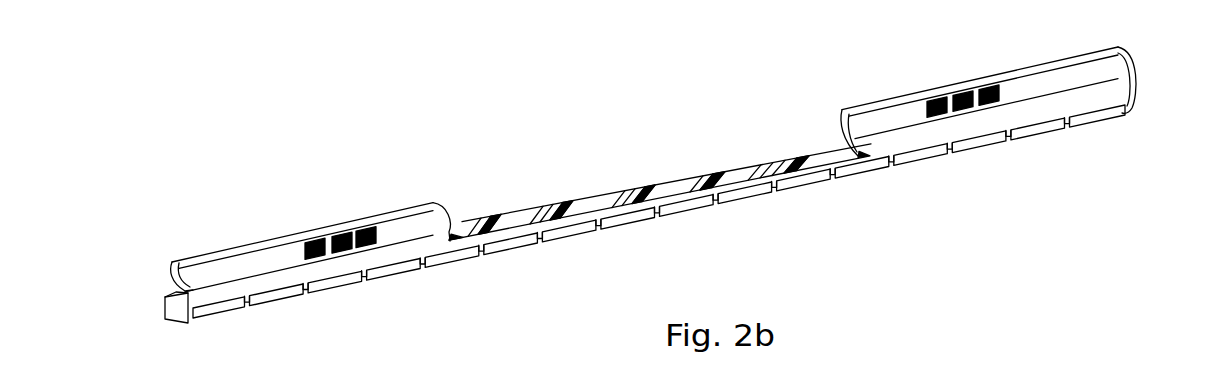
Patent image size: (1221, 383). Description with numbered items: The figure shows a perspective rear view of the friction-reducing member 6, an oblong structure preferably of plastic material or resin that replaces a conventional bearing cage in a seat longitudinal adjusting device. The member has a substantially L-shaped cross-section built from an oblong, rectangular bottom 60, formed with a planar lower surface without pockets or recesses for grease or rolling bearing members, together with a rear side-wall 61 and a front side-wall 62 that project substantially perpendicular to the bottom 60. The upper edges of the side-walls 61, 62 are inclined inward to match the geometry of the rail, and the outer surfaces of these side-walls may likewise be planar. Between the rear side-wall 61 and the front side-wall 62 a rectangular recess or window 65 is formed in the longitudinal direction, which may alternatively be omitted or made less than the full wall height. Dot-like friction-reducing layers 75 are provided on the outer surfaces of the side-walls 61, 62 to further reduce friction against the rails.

The friction-reducing member 6 is at (612, 60).
The bottom 60 is at (641, 224).
The rear side-wall 61 is at (1133, 62).
The front side-wall 62 is at (217, 266).
The rectangular recess or window 65 is at (564, 176).
The dot-like friction-reducing layers 75 is at (368, 218).